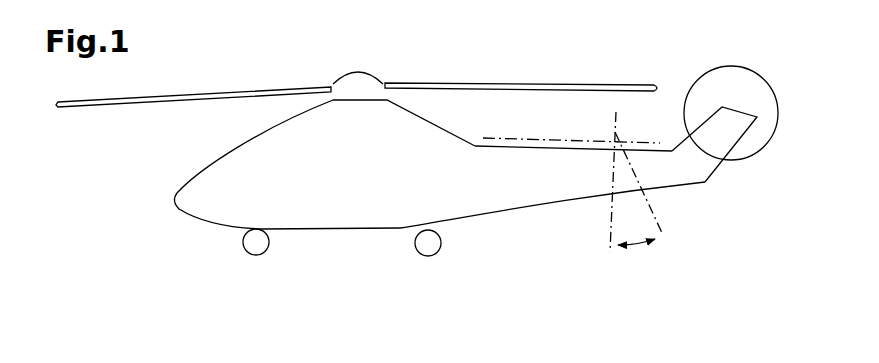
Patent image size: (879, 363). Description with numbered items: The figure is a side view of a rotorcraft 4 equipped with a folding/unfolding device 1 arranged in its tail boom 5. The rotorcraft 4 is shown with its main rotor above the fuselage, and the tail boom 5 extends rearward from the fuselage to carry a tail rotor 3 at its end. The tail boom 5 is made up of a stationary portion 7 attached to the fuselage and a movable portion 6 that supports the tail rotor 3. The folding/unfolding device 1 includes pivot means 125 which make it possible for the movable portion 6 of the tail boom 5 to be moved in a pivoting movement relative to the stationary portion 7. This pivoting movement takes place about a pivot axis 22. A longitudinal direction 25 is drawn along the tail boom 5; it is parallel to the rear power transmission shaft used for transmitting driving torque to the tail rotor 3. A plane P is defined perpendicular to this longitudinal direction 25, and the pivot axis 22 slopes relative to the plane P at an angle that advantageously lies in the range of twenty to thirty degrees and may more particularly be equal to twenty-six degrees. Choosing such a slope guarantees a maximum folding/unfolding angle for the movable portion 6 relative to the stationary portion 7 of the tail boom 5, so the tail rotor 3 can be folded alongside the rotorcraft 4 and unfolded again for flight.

The folding/unfolding device 1 is at (636, 136).
The tail rotor 3 is at (730, 78).
The rotorcraft 4 is at (268, 78).
The tail boom 5 is at (559, 206).
The movable portion 6 is at (718, 135).
The stationary portion 7 is at (583, 168).
The longitudinal direction 25 is at (540, 130).
The pivot means 125 is at (656, 172).
The pivot axis 22 is at (666, 222).
The plane P is at (610, 232).